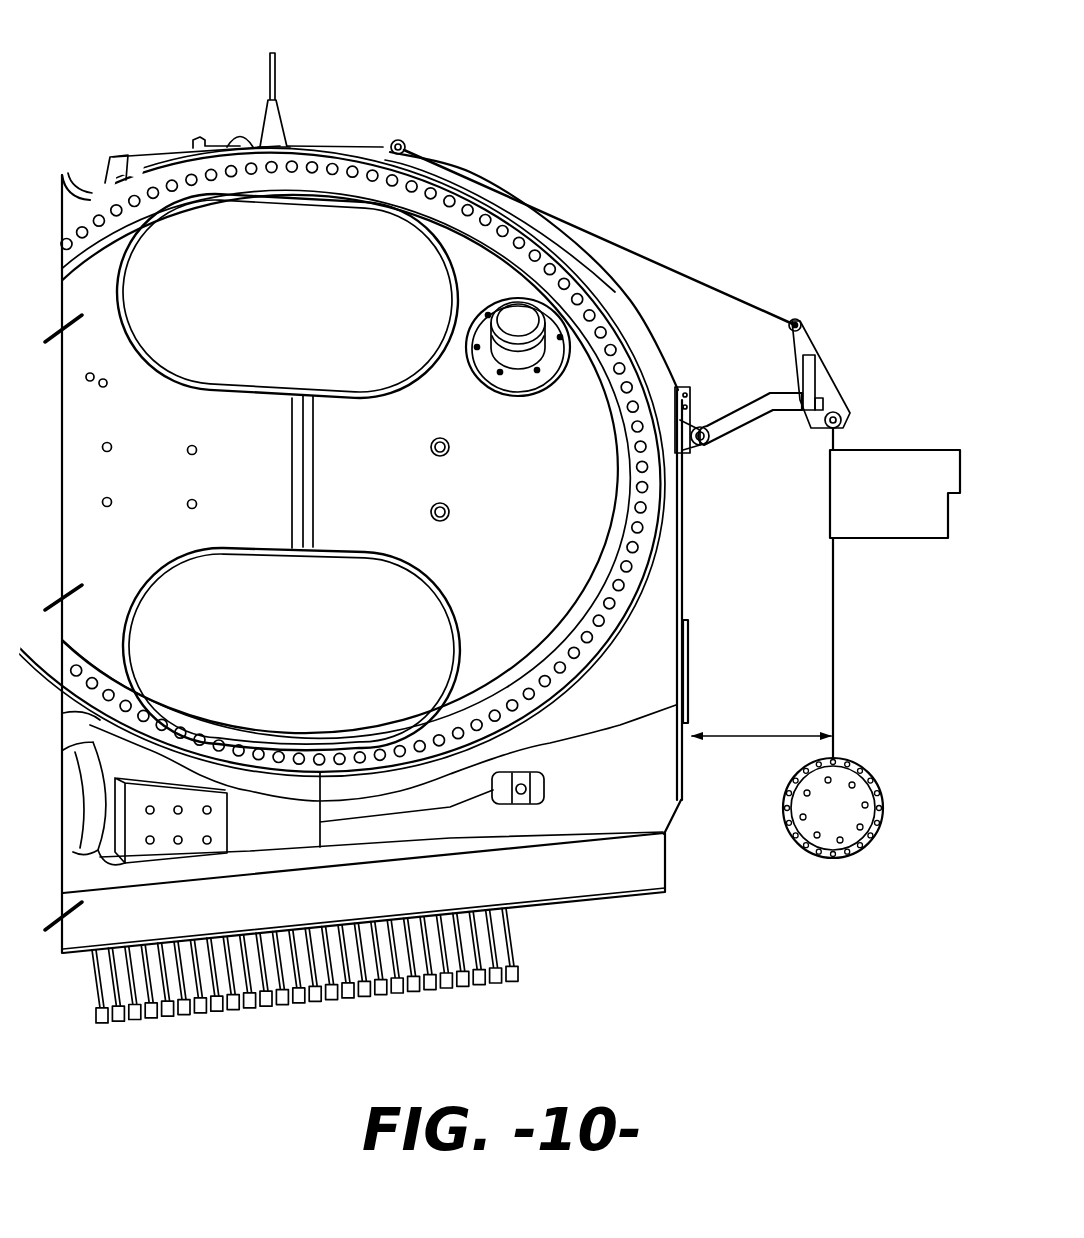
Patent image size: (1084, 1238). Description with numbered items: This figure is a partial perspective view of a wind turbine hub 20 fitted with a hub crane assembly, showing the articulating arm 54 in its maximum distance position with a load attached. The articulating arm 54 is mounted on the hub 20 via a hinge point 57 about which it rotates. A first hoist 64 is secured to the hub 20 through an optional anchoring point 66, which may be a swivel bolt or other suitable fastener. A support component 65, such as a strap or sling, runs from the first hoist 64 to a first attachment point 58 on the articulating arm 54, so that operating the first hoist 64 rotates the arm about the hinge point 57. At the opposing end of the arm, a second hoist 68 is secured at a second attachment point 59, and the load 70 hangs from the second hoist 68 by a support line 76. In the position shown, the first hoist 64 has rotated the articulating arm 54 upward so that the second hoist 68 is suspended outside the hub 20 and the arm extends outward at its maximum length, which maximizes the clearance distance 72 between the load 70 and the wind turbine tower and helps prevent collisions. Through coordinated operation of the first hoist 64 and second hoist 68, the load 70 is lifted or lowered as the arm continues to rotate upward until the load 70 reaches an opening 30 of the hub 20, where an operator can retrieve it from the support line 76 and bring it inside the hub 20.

The hub 20 is at (686, 815).
The opening 30 is at (687, 598).
The articulating arm 54 is at (726, 408).
The hinge point 57 is at (705, 443).
The first attachment point 58 is at (799, 322).
The second attachment point 59 is at (845, 420).
The first hoist 64 is at (282, 86).
The support component 65 is at (682, 280).
The anchoring point 66 is at (204, 140).
The second hoist 68 is at (868, 545).
The load 70 is at (888, 799).
The clearance distance 72 is at (767, 734).
The support line 76 is at (838, 675).